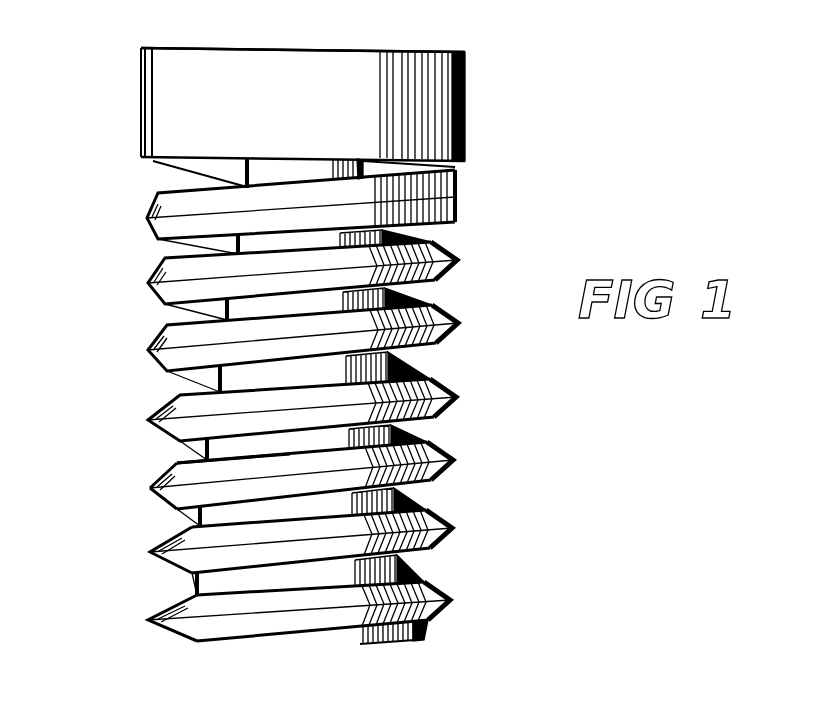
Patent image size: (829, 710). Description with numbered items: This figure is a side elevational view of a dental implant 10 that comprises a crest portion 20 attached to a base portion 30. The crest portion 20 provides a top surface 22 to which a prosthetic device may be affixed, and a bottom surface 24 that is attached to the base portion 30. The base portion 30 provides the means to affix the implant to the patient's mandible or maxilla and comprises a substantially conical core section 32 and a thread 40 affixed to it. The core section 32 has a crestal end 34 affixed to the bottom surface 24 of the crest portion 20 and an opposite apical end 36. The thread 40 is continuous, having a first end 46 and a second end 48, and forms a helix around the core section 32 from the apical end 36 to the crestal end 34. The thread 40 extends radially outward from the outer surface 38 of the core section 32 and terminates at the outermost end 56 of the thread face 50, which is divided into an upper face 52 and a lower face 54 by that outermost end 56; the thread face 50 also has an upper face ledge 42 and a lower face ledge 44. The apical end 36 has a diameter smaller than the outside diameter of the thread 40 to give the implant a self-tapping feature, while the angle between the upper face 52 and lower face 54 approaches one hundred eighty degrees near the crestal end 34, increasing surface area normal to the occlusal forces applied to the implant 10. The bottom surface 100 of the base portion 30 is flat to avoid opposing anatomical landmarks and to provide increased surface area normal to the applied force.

The dental implant 10 is at (110, 70).
The crest portion 20 is at (256, 117).
The top surface 22 is at (440, 48).
The bottom surface 24 is at (453, 165).
The second end 48 is at (173, 167).
The crestal end 34 is at (289, 187).
The base portion 30 is at (140, 392).
The core section 32 is at (390, 368).
The thread 40 is at (443, 452).
The outer surface 38 is at (407, 497).
The upper face ledge 42 is at (185, 452).
The upper face 52 is at (165, 480).
The thread face 50 is at (135, 489).
The lower face 54 is at (163, 497).
The lower face ledge 44 is at (200, 515).
The outermost end 56 is at (160, 550).
The first end 46 is at (165, 630).
The apical end 36 is at (397, 643).
The bottom surface 100 is at (310, 643).